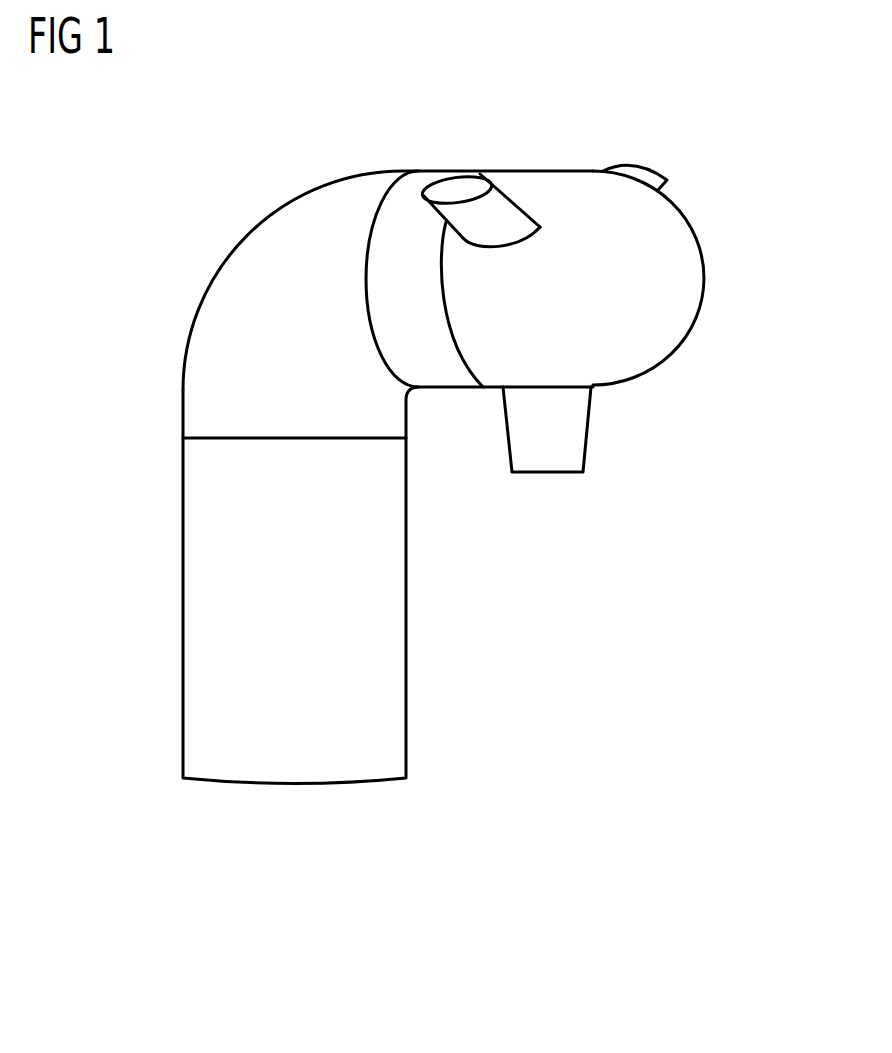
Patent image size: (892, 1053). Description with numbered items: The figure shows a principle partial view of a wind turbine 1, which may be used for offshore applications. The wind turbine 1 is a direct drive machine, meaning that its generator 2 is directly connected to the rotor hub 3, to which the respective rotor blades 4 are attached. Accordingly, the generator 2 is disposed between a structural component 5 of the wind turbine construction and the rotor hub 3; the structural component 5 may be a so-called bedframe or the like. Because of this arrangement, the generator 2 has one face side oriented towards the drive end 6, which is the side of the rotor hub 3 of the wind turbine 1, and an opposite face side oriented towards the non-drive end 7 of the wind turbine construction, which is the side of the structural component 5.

The wind turbine 1 is at (544, 653).
The generator 2 is at (447, 168).
The rotor hub 3 is at (704, 277).
The rotor blades 4 is at (647, 168).
The structural component 5 is at (208, 283).
The drive end 6 is at (798, 405).
The non-drive end 7 is at (74, 402).